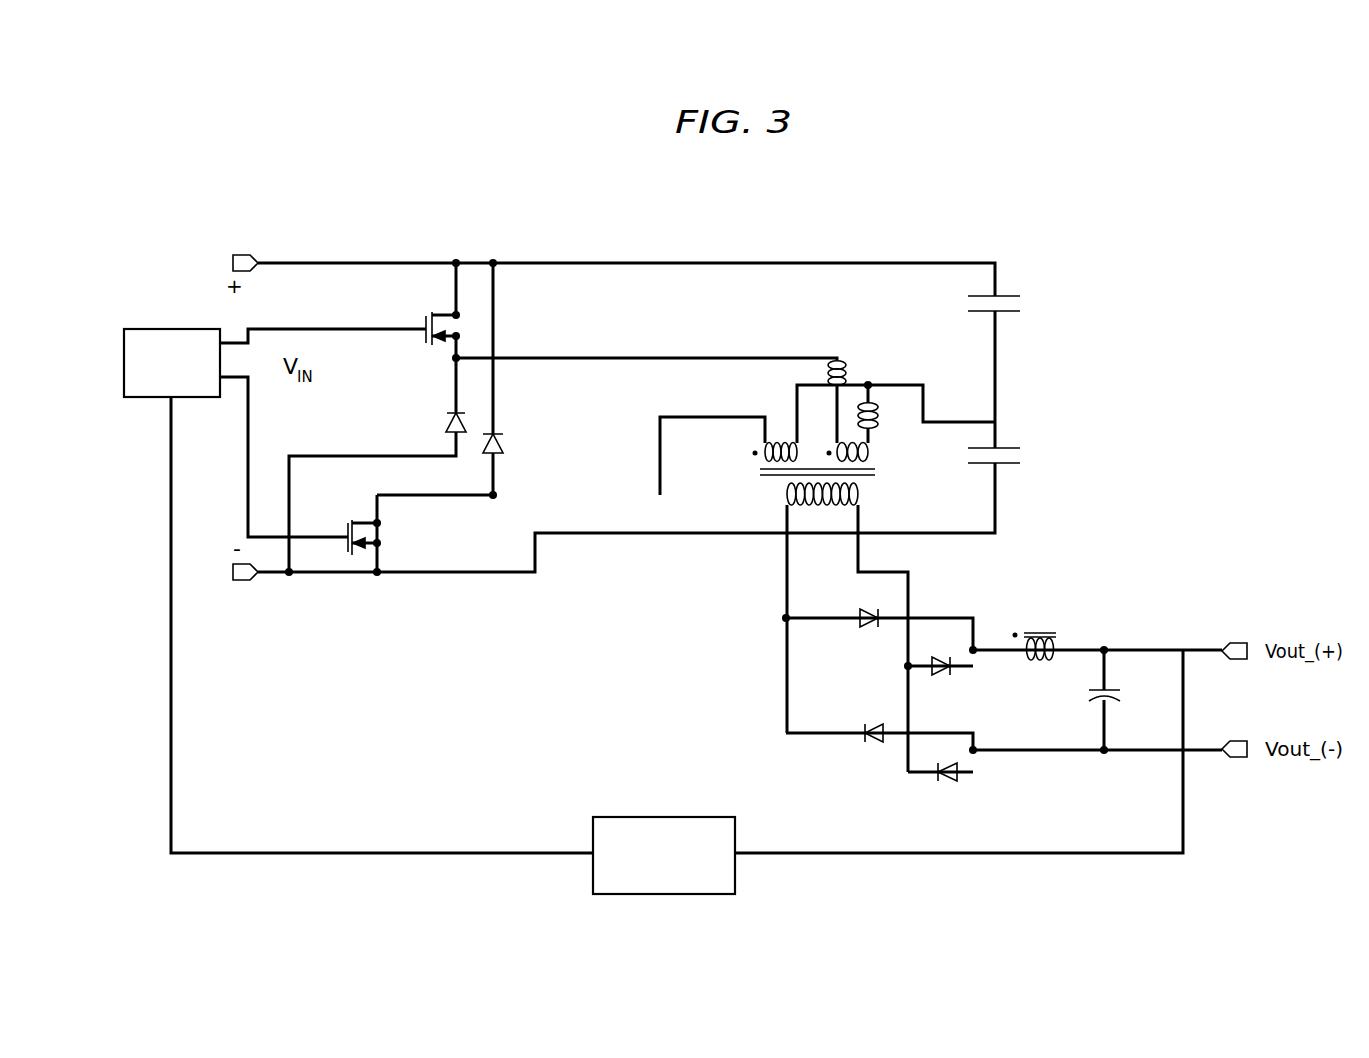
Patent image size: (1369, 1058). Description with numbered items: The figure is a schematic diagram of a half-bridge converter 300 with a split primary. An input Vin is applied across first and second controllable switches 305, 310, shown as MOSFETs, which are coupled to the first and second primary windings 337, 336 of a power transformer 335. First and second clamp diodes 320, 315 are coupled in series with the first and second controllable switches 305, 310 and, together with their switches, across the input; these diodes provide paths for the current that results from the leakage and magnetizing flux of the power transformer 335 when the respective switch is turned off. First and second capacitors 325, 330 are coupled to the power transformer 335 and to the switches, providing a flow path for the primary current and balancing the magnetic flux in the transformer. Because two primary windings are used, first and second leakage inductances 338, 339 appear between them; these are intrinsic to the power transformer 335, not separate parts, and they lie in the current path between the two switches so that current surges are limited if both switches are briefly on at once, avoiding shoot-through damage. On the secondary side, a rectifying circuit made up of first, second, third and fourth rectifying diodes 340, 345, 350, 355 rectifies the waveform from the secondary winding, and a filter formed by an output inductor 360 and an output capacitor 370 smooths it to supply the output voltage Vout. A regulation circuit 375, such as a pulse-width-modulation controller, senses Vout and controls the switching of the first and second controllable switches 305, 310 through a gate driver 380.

The half-bridge converter 300 is at (1140, 296).
The first controllable switch 305 is at (426, 315).
The second controllable switch 310 is at (349, 523).
The second clamp diode 315 is at (503, 450).
The first clamp diode 320 is at (447, 424).
The first capacitor 325 is at (1018, 296).
The second capacitor 330 is at (1020, 448).
The power transformer 335 is at (790, 477).
The second primary winding 336 is at (778, 442).
The first primary winding 337 is at (872, 462).
The first leakage inductance 338 is at (830, 358).
The second leakage inductance 339 is at (878, 412).
The first rectifying diode 340 is at (868, 628).
The second rectifying diode 345 is at (863, 740).
The third rectifying diode 350 is at (950, 672).
The fourth rectifying diode 355 is at (957, 776).
The output inductor 360 is at (1052, 637).
The output capacitor 370 is at (1096, 690).
The regulation circuit 375 is at (640, 817).
The gate driver 380 is at (172, 329).